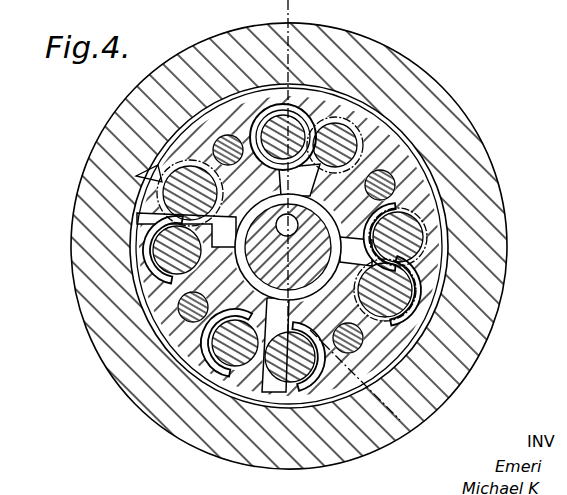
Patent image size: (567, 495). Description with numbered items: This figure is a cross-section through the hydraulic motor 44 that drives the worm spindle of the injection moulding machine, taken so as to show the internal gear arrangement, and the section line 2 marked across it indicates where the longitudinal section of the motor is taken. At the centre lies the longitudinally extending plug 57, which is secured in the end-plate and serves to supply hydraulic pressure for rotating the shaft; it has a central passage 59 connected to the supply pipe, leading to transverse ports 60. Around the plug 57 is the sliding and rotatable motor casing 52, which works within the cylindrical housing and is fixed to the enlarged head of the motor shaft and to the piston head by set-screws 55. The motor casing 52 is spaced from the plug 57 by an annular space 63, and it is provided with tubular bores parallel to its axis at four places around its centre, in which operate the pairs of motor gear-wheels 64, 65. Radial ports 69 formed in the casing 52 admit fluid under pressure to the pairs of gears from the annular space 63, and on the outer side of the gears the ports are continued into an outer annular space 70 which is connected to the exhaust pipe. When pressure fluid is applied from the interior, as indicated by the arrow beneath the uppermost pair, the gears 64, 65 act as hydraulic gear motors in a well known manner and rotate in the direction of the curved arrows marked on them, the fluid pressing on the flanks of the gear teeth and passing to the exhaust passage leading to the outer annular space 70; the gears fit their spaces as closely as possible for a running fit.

The section line 2— 2 is at (300, 6).
The hydraulic motor 44 is at (120, 110).
The motor casing 52 is at (245, 262).
The set-screws 55 is at (445, 223).
The plug 57 is at (175, 305).
The central passage 59 is at (420, 327).
The transverse ports 60 is at (130, 323).
The annular space 63 is at (222, 322).
The motor gear-wheel 64 is at (315, 147).
The motor gear-wheel 65 is at (355, 118).
The radial ports 69 is at (160, 212).
The outer annular space 70 is at (150, 160).